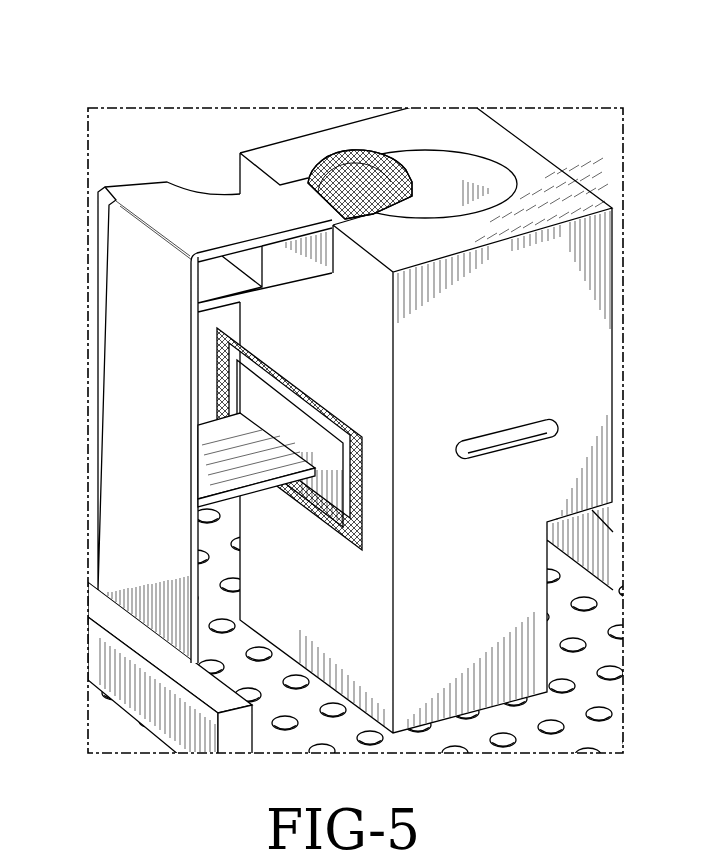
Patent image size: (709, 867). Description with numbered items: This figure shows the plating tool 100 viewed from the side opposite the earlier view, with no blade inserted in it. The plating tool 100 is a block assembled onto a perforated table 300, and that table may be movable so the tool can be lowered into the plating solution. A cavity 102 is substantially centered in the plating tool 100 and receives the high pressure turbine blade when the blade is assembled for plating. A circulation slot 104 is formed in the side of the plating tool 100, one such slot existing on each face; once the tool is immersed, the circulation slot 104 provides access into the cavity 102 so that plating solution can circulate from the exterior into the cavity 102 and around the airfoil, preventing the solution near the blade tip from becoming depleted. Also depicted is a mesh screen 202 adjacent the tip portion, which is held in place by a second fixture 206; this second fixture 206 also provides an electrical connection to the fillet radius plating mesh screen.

The plating tool 100 is at (558, 180).
The cavity 102 is at (475, 188).
The circulation slot 104 is at (497, 443).
The mesh screen 202 is at (308, 397).
The second fixture 206 is at (135, 412).
The perforated table 300 is at (503, 738).